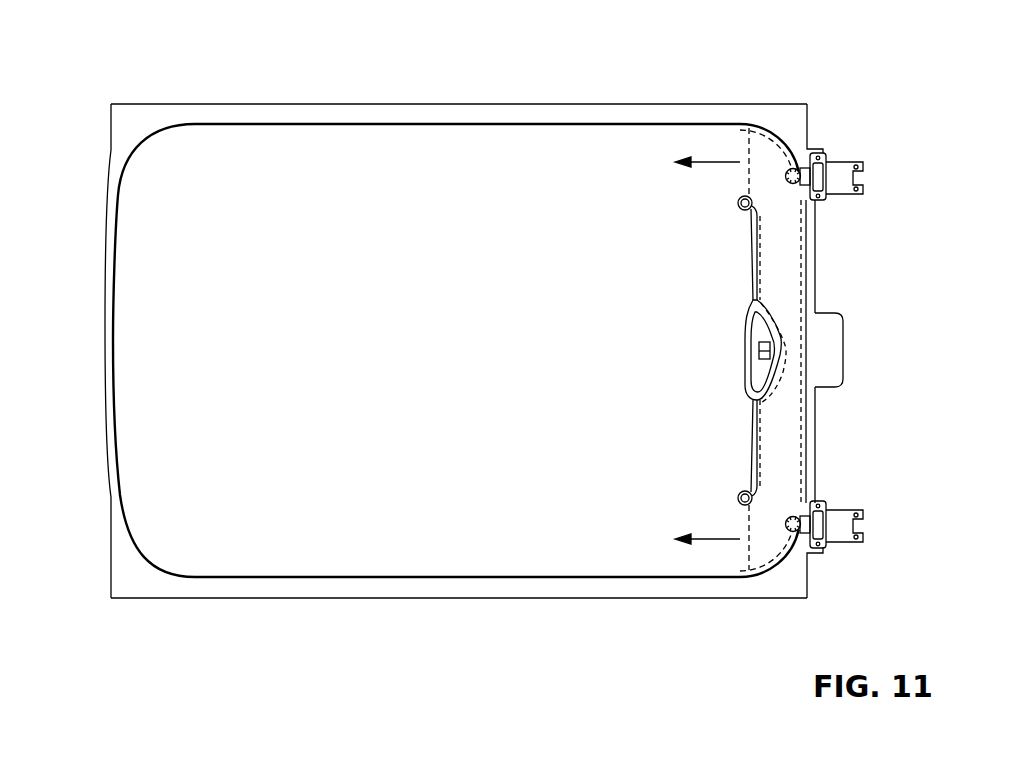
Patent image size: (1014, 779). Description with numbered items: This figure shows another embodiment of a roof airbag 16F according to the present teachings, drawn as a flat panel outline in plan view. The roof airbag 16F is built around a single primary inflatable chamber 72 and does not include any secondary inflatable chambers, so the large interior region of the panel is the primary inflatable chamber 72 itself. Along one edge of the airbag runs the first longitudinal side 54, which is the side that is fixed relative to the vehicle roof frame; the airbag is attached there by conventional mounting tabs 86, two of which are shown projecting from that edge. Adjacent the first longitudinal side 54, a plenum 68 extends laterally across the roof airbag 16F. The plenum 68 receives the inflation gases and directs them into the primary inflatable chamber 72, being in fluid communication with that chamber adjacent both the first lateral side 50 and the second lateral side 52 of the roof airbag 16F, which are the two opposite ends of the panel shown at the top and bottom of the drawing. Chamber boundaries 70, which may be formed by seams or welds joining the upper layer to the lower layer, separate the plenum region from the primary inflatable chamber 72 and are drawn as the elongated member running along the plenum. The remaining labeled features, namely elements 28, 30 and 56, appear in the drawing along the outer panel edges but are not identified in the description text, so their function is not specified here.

The roof airbag 16F is at (576, 82).
The inner door panel 28 is at (467, 117).
The outer door panel 30 is at (432, 599).
The first lateral side 50 is at (312, 117).
The second lateral side 52 is at (313, 599).
The first longitudinal side 54 is at (809, 123).
The handle-side edge of door 56 is at (104, 360).
The plenum 68 is at (808, 234).
The chamber boundaries 70 is at (760, 280).
The primary inflatable chamber 72 is at (456, 350).
The mounting tabs 86 is at (838, 163).